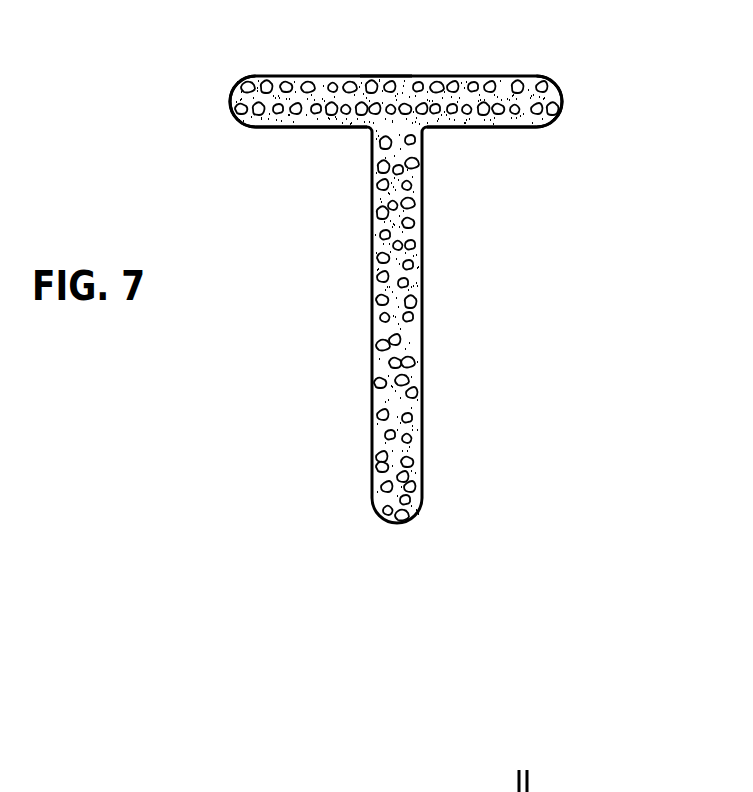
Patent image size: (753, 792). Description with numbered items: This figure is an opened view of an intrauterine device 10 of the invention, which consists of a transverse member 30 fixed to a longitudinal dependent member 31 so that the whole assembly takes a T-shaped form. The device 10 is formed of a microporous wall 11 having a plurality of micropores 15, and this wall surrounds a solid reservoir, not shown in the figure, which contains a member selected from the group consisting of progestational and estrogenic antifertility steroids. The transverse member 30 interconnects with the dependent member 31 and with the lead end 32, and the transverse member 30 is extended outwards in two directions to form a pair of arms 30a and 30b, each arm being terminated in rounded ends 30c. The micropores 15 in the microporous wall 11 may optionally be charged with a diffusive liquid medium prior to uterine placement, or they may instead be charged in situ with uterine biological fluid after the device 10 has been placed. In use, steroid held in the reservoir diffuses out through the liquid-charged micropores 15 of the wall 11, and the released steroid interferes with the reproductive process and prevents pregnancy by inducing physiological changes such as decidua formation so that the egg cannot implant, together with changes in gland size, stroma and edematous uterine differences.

The intrauterine device 10 is at (453, 308).
The microporous wall 11 is at (422, 273).
The micropores 15 is at (422, 413).
The transverse member 30 is at (467, 76).
The arm 30a is at (500, 128).
The arm 30b is at (286, 128).
The rounded ends 30c is at (230, 103).
The longitudinal dependent member 31 is at (422, 447).
The lead end 32 is at (392, 76).